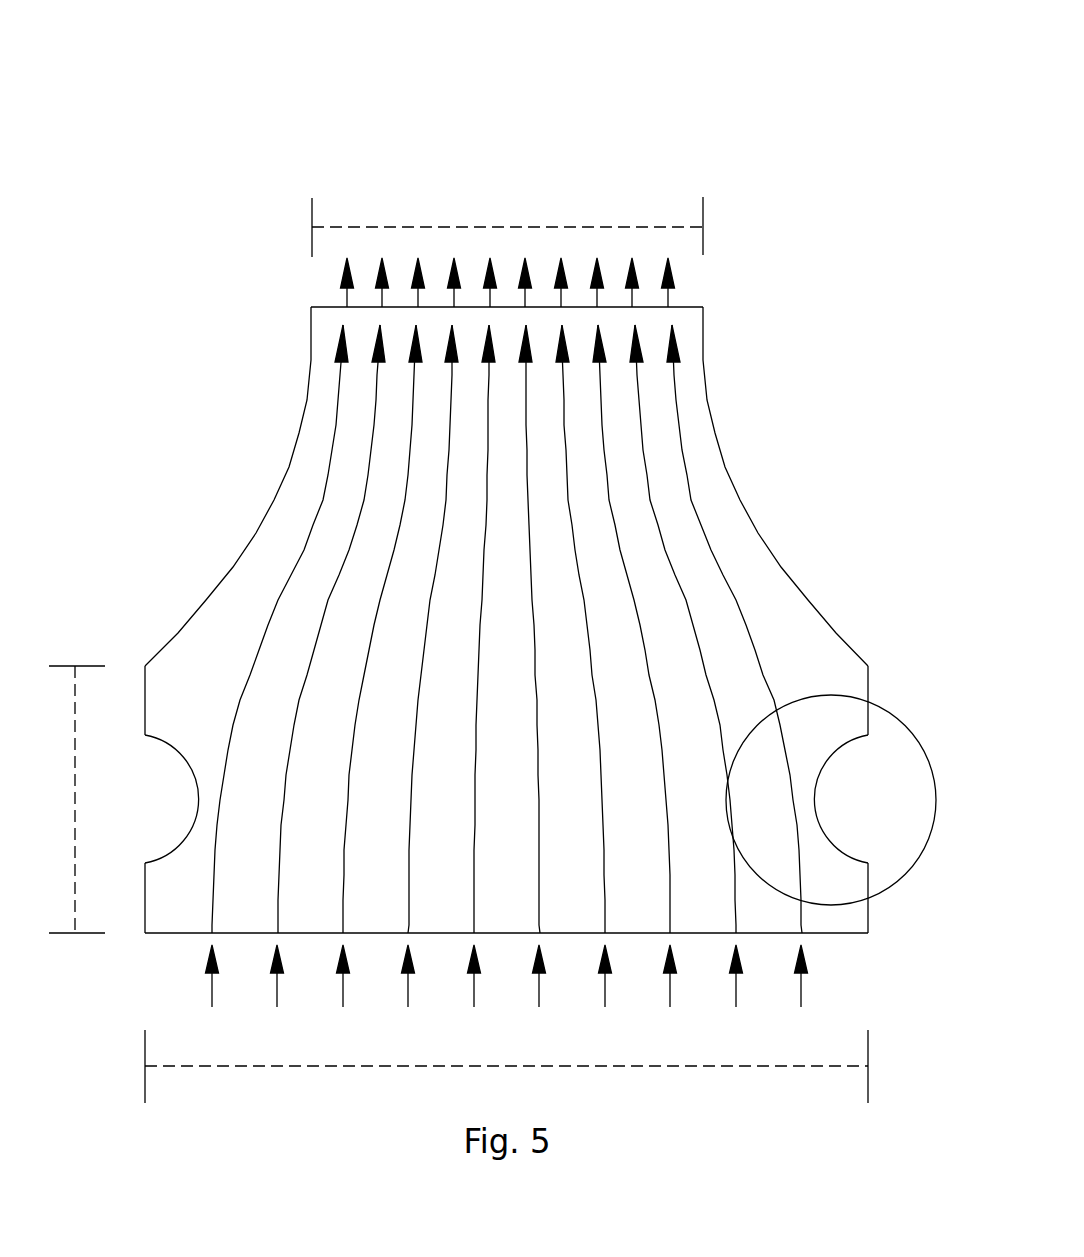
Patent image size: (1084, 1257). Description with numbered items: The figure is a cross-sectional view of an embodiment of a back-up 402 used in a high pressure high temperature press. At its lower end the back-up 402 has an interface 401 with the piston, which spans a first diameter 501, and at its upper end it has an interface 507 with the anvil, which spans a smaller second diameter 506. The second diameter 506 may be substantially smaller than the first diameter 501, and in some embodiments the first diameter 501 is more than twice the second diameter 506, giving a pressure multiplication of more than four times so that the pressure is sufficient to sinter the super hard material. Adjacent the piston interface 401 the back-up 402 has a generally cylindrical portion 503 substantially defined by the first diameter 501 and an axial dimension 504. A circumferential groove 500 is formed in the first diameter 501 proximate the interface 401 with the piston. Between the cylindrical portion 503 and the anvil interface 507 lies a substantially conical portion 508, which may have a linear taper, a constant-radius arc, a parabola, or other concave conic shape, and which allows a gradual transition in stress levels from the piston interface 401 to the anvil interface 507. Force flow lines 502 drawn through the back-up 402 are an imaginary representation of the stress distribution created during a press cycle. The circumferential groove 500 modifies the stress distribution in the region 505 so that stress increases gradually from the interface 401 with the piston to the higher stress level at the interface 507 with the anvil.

The back-up 402 is at (226, 155).
The substantially conical portion 508 is at (209, 395).
The generally cylindrical portion 503 is at (112, 590).
The circumferential groove 500 is at (156, 774).
The axial dimension 504 is at (75, 825).
The first diameter 501 is at (187, 1066).
The interface with the piston 401 is at (822, 933).
The region 505 is at (873, 705).
The force flow lines 502 is at (710, 553).
The interface with the anvil 507 is at (684, 307).
The second diameter 506 is at (684, 227).